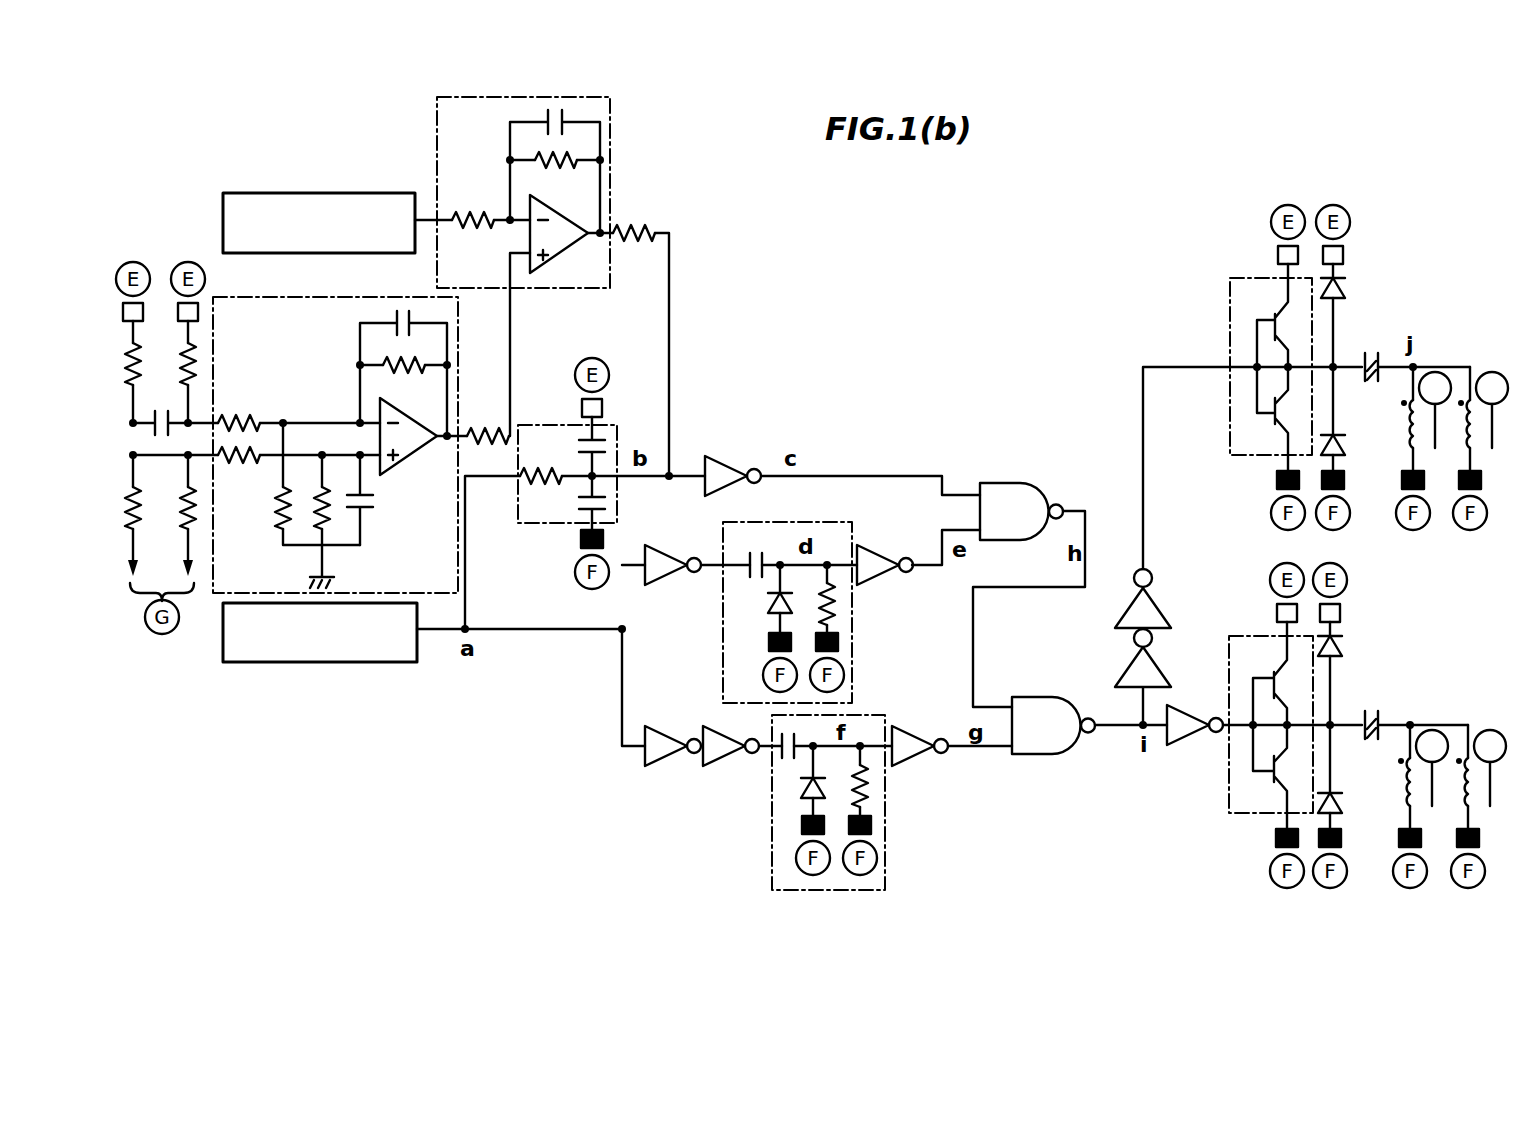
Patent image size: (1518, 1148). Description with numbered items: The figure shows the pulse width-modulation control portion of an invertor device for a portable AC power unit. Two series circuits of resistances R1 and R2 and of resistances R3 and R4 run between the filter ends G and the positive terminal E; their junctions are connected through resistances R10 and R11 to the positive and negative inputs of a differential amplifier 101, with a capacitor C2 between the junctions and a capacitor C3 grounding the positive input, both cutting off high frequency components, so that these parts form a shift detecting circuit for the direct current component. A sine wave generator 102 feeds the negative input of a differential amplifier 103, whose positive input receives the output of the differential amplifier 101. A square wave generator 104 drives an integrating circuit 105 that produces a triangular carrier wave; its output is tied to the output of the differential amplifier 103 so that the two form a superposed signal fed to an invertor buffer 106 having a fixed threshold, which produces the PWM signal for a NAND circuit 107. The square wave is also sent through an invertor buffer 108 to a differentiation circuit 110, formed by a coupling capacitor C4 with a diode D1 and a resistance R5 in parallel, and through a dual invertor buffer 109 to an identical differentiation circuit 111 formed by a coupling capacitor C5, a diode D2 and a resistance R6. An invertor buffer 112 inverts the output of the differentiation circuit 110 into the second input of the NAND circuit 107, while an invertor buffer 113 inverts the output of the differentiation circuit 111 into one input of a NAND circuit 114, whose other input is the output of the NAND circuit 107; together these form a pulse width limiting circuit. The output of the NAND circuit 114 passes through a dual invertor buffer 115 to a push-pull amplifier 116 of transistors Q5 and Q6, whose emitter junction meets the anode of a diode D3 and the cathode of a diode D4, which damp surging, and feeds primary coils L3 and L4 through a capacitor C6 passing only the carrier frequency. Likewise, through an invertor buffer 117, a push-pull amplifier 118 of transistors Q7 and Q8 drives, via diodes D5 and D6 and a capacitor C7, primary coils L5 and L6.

The differential amplifier 101 is at (329, 423).
The sine wave generator 102 is at (342, 192).
The differential amplifier (shift correction circuit) 103 is at (527, 290).
The square wave generator 104 is at (312, 662).
The integrating circuit (triangular wave generator) 105 is at (530, 523).
The invertor buffer (pulse width modulating circuit) 106 is at (735, 455).
The NAND circuit 107 is at (1010, 482).
The invertor buffer 108 is at (690, 590).
The dual invertor buffer 109 is at (689, 772).
The differentiation circuit 110 is at (798, 592).
The differentiation circuit 111 is at (827, 780).
The invertor buffer 112 is at (872, 545).
The invertor buffer 113 is at (913, 750).
The NAND circuit 114 is at (1040, 698).
The dual invertor buffer 115 is at (1123, 652).
The push-pull amplifier 116 is at (1238, 379).
The invertor buffer 117 is at (1178, 758).
The push-pull amplifier 118 is at (1249, 729).
The resistance R1 is at (140, 382).
The resistance R2 is at (152, 515).
The resistance R3 is at (197, 376).
The resistance R4 is at (192, 528).
The resistance R5 is at (842, 622).
The resistance R6 is at (872, 790).
The resistance R10 is at (239, 463).
The resistance R11 is at (246, 417).
The capacitor C2 is at (163, 440).
The capacitor C3 is at (373, 498).
The coupling capacitor C4 is at (736, 560).
The coupling capacitor C5 is at (782, 746).
The capacitor C6 is at (1366, 365).
The capacitor C7 is at (1362, 720).
The diode D1 is at (760, 602).
The diode D2 is at (794, 774).
The diode D3 is at (1342, 286).
The diode D4 is at (1346, 458).
The diode D5 is at (1344, 654).
The diode D6 is at (1342, 810).
The primary coil L3 is at (1399, 434).
The primary coil L4 is at (1461, 430).
The primary coil L5 is at (1398, 792).
The primary coil L6 is at (1454, 798).
The transistor Q5 is at (1267, 316).
The transistor Q6 is at (1273, 436).
The transistor Q7 is at (1272, 675).
The transistor Q8 is at (1256, 806).